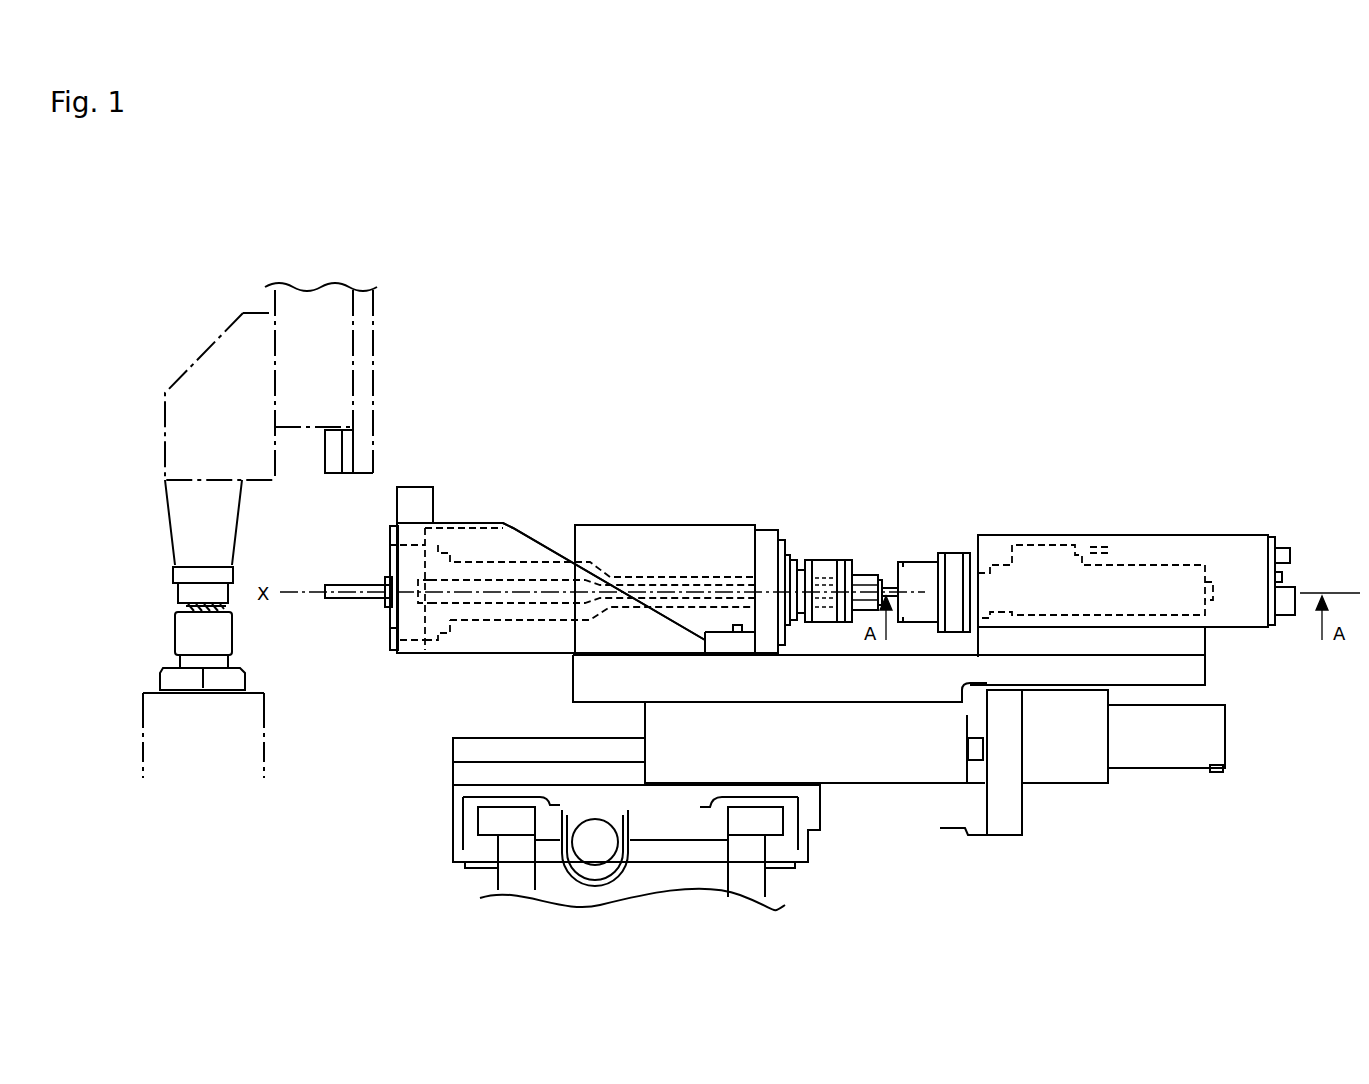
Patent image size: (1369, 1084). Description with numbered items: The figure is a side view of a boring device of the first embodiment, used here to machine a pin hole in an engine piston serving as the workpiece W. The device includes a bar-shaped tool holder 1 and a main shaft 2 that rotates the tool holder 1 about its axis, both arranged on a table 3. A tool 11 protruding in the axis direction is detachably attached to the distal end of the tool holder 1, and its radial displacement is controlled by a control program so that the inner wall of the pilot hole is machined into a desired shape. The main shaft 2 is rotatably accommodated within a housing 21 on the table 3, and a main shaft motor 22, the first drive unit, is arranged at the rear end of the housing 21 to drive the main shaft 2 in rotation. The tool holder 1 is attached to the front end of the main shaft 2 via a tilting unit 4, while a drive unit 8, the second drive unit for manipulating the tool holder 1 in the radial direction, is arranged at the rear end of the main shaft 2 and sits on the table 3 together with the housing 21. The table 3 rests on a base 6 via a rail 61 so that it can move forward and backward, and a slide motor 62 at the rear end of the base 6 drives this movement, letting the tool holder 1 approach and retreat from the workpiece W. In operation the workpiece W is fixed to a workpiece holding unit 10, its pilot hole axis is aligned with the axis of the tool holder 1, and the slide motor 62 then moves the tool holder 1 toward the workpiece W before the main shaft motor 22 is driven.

The tool holder 1 is at (352, 606).
The main shaft 2 is at (497, 627).
The housing 21 is at (508, 540).
The main shaft motor 22 is at (647, 540).
The tilting unit 4 is at (410, 655).
The tool 11 is at (327, 580).
The table 3 is at (1188, 672).
The base 6 is at (868, 825).
The rail 61 is at (465, 748).
The slide motor 62 is at (1155, 755).
The drive unit 8 is at (1147, 530).
The workpiece holding unit 10 is at (150, 443).
The workpiece W is at (173, 577).